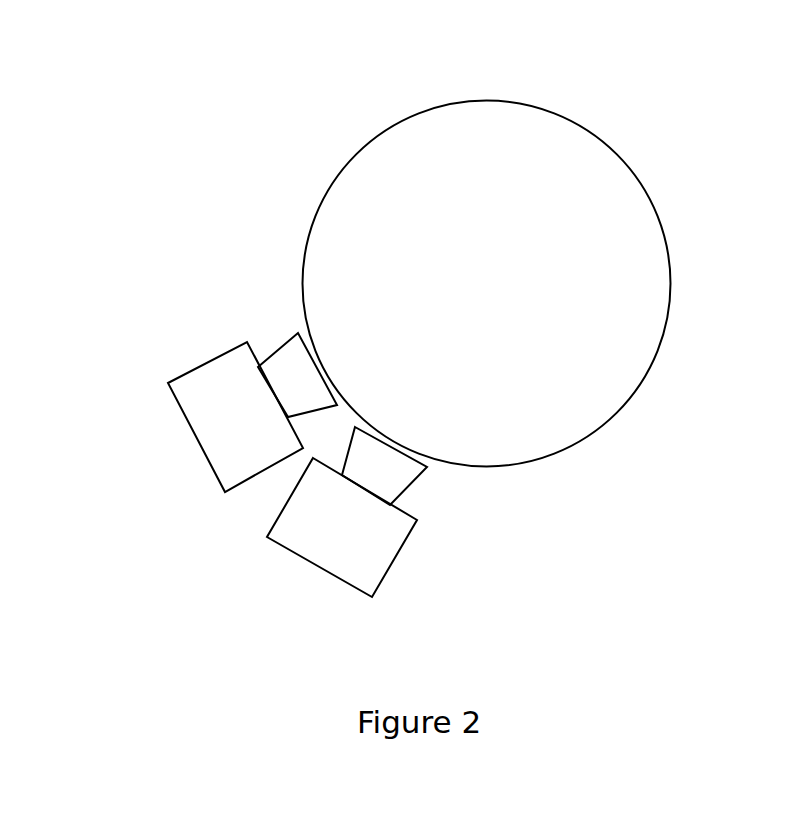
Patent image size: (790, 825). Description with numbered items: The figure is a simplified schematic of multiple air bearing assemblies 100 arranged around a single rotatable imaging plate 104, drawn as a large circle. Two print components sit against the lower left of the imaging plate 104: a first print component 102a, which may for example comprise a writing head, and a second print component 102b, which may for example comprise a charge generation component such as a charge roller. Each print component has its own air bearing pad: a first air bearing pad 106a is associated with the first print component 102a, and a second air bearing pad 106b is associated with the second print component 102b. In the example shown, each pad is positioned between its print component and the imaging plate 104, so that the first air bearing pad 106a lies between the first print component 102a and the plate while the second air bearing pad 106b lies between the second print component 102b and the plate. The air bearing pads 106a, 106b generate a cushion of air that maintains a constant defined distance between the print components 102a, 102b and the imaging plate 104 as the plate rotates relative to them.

The air bearing assembly 100 is at (170, 242).
The imaging plate 104 is at (511, 299).
The first print component 102a is at (390, 558).
The second print component 102b is at (195, 368).
The first air bearing pad 106a is at (413, 485).
The second air bearing pad 106b is at (283, 347).